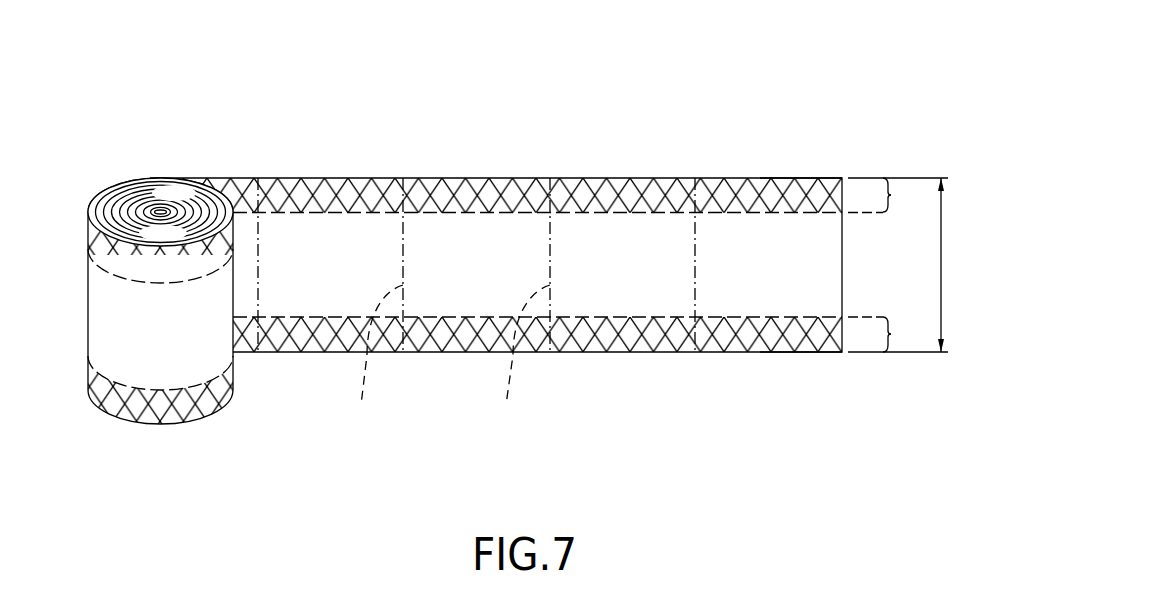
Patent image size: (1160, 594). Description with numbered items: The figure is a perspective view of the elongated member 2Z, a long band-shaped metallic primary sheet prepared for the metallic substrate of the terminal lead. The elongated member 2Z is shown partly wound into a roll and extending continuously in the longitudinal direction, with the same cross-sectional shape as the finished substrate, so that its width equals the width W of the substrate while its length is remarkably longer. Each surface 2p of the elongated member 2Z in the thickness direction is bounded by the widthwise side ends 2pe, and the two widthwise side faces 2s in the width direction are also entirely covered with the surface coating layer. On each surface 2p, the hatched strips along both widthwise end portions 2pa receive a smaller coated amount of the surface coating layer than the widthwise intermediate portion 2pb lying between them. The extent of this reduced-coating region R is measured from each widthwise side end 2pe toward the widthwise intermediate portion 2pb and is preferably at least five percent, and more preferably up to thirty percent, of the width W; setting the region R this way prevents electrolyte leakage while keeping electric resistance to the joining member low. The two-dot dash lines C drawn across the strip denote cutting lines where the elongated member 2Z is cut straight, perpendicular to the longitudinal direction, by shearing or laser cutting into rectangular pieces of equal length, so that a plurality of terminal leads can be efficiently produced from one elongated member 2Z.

The elongated member 2Z is at (230, 177).
The side face 2s is at (450, 412).
The widthwise end portion 2pa is at (702, 450).
The widthwise intermediate portion 2pb is at (595, 267).
The surface 2p is at (728, 480).
The widthwise side end 2pe is at (813, 408).
The cutting lines C is at (449, 361).
The region R is at (882, 264).
The width W is at (929, 265).